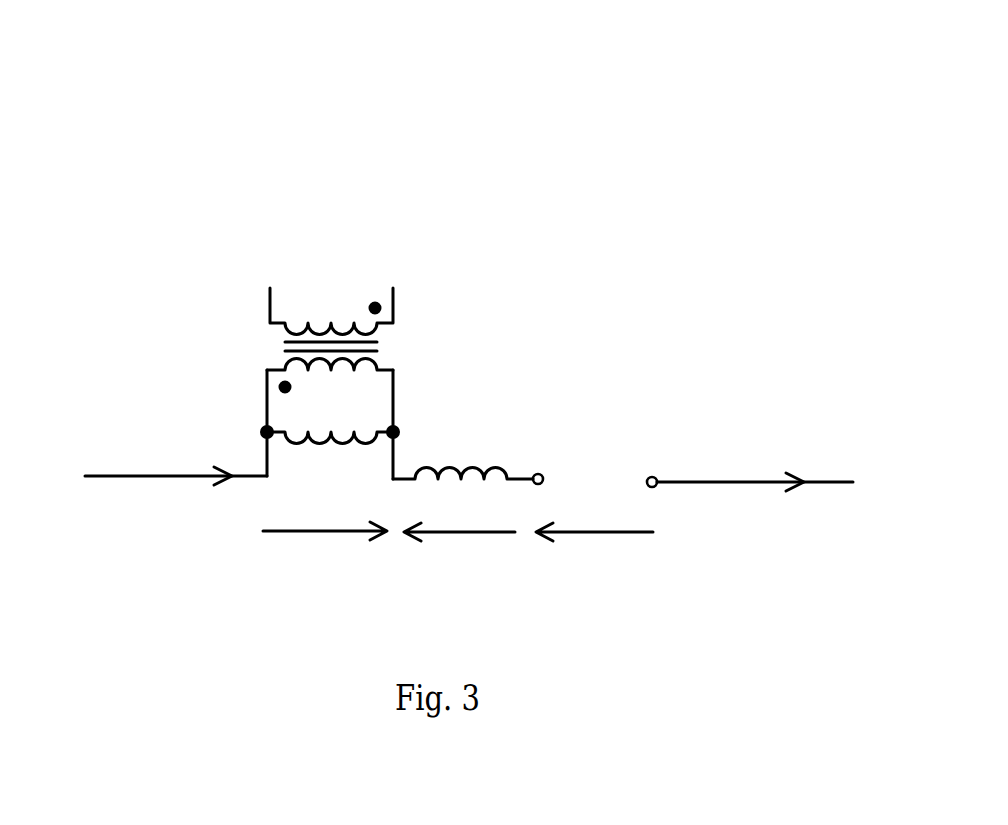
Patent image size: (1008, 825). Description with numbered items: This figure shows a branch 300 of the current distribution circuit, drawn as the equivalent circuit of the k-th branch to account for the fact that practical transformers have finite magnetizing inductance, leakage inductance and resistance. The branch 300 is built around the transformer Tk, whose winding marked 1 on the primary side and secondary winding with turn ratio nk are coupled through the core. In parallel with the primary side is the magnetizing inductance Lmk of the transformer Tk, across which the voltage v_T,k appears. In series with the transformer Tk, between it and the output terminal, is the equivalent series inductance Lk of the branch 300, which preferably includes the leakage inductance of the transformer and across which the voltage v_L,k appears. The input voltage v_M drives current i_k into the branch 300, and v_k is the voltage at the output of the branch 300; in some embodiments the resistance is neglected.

The branch 300 is at (634, 137).
The primary winding (unity turns) 1 is at (330, 396).
The transformer Tk is at (353, 359).
The turn ratio nk is at (331, 311).
The magnetizing inductance Lmk is at (330, 460).
The equivalent series inductance Lk is at (463, 495).